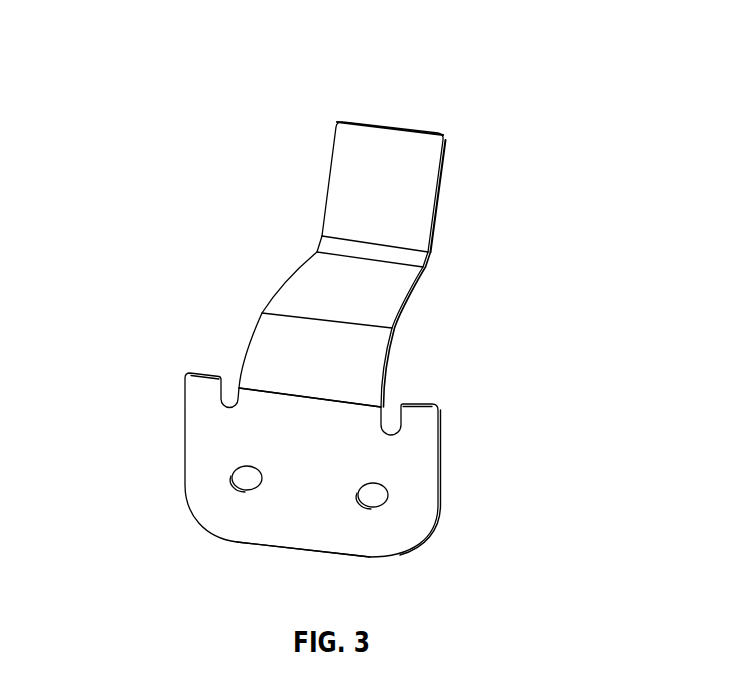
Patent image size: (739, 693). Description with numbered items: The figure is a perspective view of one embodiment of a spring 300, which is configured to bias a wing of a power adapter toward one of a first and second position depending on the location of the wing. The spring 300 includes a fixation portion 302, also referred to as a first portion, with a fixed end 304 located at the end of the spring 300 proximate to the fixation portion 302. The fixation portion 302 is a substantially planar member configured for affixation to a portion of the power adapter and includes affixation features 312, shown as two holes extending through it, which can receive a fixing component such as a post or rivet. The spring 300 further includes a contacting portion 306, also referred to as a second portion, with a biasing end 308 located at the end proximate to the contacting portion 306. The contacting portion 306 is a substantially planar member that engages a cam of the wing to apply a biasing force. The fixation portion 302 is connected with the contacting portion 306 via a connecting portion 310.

The spring 300 is at (176, 98).
The fixation portion 302 is at (462, 474).
The fixed end 304 is at (294, 553).
The contacting portion 306 is at (452, 183).
The biasing end 308 is at (396, 120).
The connecting portion 310 is at (284, 276).
The affixation features 312 is at (230, 484).